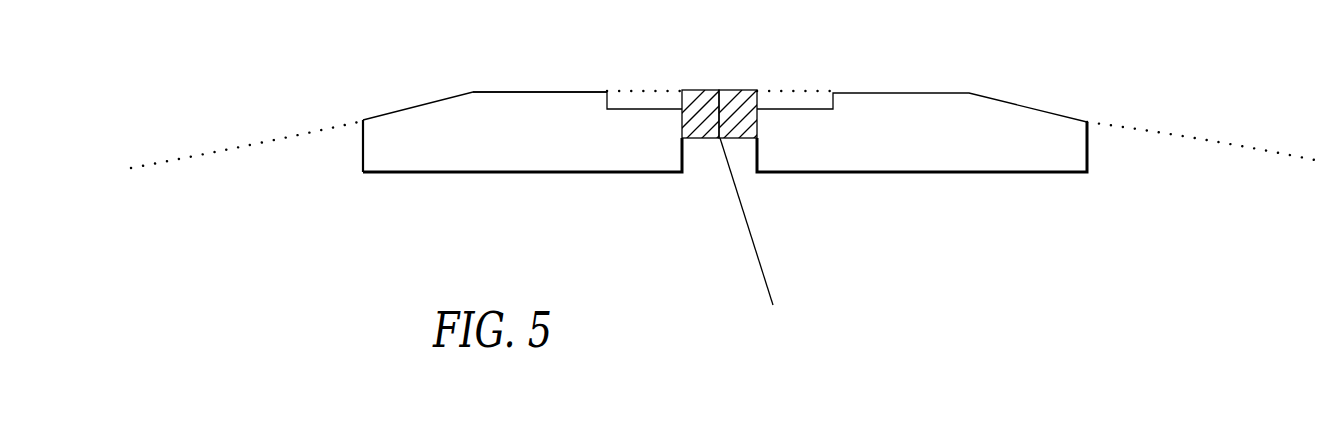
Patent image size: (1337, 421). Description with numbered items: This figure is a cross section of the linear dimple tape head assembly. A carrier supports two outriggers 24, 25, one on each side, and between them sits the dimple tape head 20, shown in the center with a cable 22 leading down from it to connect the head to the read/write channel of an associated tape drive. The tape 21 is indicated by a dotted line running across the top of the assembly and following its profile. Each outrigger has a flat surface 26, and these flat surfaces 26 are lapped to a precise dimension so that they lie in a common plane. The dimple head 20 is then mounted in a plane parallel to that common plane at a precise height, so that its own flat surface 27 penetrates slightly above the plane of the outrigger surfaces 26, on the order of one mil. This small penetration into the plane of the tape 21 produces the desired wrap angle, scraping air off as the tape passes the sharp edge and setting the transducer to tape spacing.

The dimple tape head 20 is at (737, 97).
The tape 21 is at (228, 148).
The cable 22 is at (763, 272).
The outrigger 24 is at (363, 158).
The outrigger 25 is at (1090, 160).
The flat surfaces 26 is at (547, 92).
The flat surface 27 is at (689, 91).